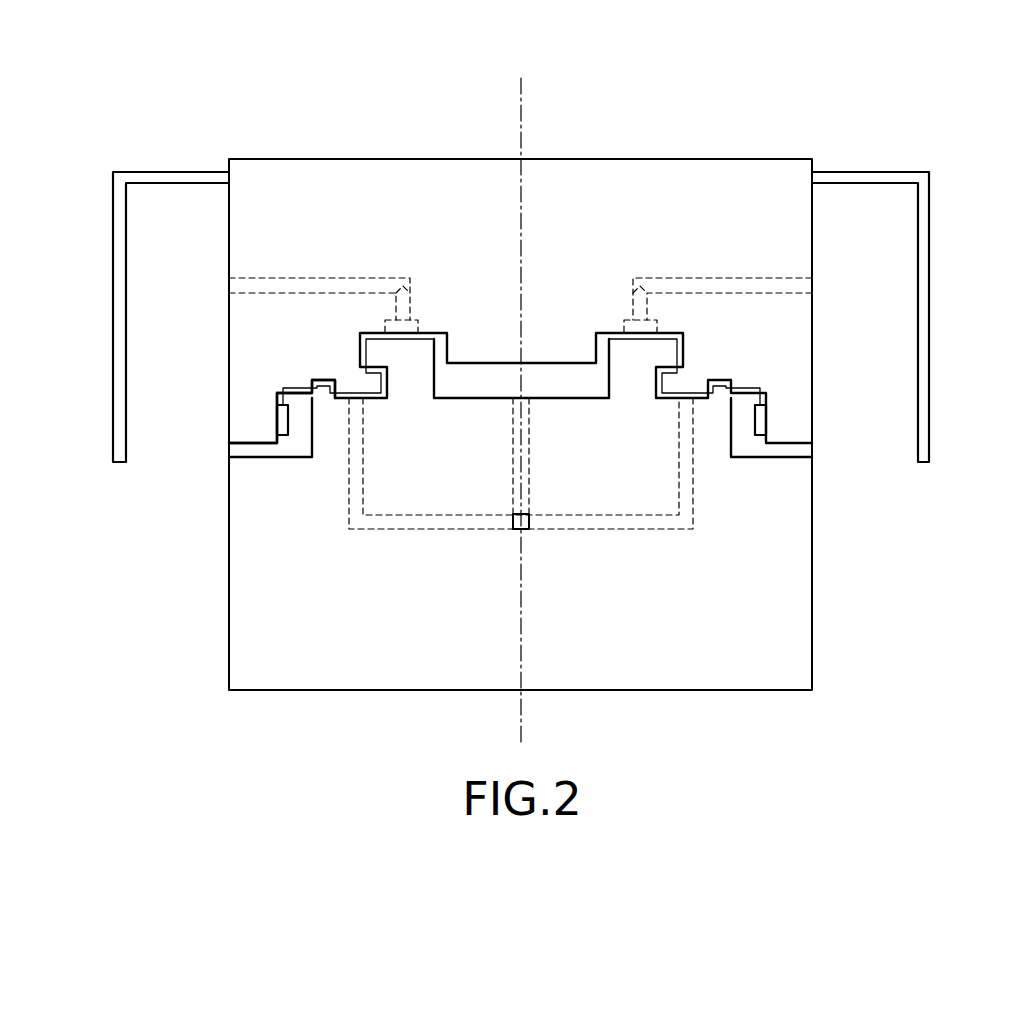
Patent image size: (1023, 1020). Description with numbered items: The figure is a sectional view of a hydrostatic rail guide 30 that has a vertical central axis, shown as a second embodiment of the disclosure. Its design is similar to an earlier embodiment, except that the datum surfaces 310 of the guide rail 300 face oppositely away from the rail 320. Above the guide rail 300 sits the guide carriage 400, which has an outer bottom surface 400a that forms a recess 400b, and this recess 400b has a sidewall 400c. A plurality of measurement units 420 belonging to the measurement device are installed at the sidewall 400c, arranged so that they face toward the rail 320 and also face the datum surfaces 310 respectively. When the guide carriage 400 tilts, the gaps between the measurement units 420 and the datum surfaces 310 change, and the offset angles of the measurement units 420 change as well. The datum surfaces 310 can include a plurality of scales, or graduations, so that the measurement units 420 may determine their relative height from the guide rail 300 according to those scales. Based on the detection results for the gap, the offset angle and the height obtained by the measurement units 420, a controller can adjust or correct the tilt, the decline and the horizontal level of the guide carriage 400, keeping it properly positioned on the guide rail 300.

The hydrostatic rail guide 30 is at (969, 106).
The guide rail 300 is at (226, 588).
The datum surface 310 is at (312, 440).
The rail 320 is at (630, 377).
The guide carriage 400 is at (362, 155).
The outer bottom surface 400a is at (252, 445).
The recess 400b is at (303, 418).
The sidewall 400c is at (278, 400).
The measurement unit 420 is at (283, 422).